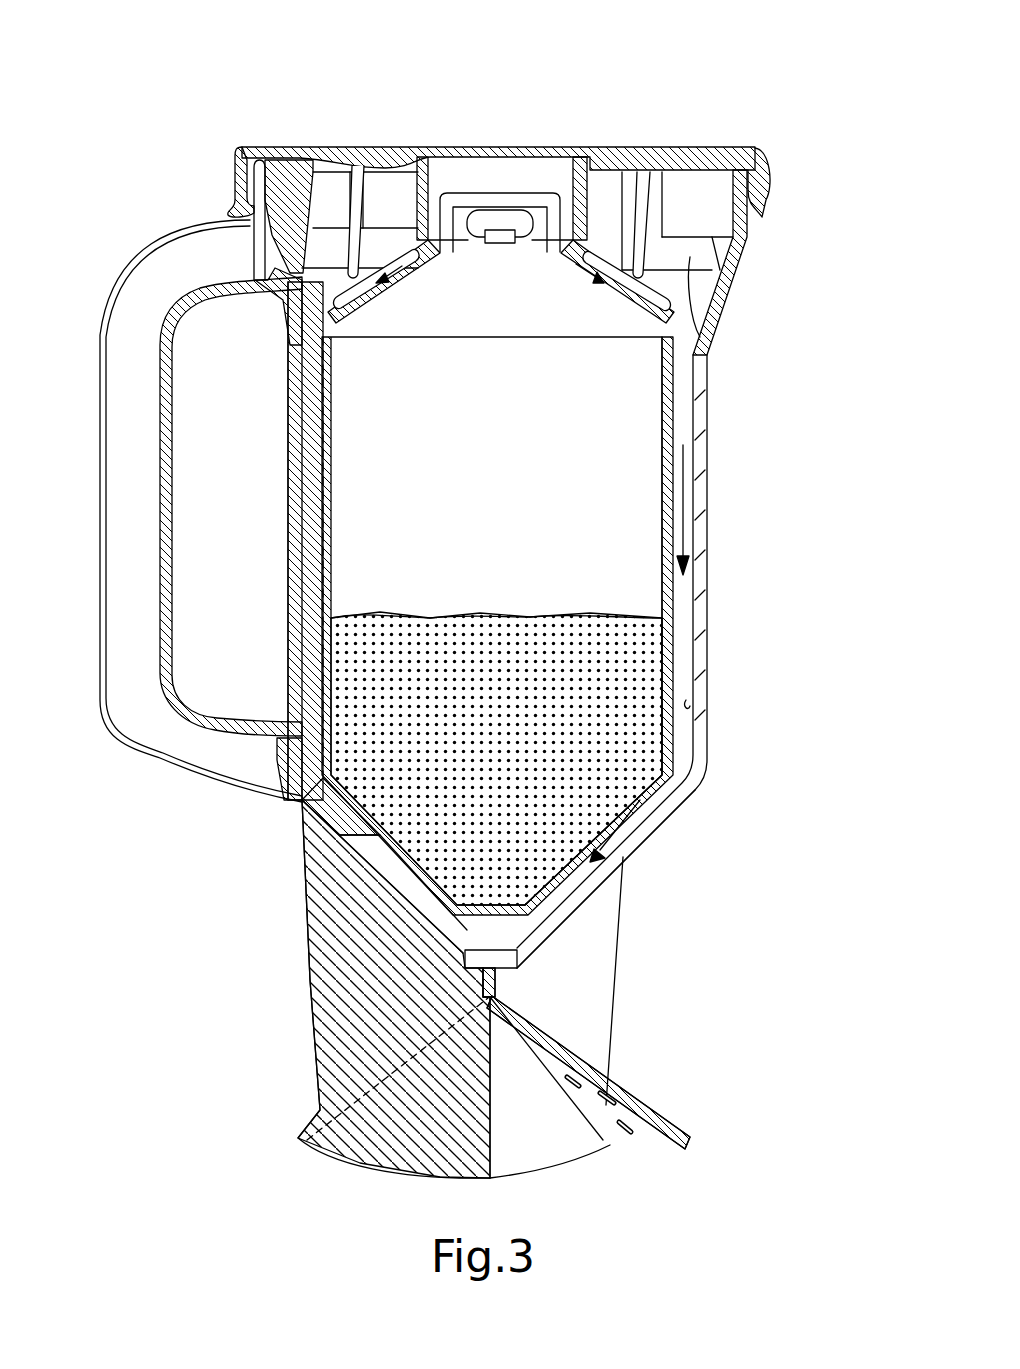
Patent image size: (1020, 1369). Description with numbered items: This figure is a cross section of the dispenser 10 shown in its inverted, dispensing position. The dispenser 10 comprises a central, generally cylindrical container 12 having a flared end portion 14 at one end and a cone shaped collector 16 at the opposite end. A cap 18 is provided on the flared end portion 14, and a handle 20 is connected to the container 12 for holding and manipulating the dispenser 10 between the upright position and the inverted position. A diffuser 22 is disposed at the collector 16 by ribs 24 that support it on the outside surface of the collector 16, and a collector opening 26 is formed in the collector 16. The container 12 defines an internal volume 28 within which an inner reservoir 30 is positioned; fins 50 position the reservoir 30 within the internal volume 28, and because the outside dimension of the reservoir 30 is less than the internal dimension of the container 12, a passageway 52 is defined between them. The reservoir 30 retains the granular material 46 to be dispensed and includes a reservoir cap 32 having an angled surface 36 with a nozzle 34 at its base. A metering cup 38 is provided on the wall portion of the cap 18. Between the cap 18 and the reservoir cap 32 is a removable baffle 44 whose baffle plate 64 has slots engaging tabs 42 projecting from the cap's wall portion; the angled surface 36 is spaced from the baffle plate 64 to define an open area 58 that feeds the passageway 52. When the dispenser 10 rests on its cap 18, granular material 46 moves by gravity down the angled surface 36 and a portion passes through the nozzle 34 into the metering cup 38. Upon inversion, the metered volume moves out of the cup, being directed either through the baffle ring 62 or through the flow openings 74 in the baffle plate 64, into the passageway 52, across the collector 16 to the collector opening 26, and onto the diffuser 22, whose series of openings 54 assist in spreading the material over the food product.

The dispenser 10 is at (166, 179).
The container 12 is at (707, 668).
The flared end portion 14 is at (545, 421).
The cone shaped collector 16 is at (640, 858).
The cap 18 is at (760, 150).
The handle 20 is at (169, 511).
The diffuser 22 is at (600, 1110).
The ribs 24 is at (587, 978).
The collector opening 26 is at (470, 960).
The internal volume 28 is at (690, 705).
The inner reservoir 30 is at (664, 636).
The reservoir cap 32 is at (695, 322).
The nozzle 34 is at (500, 255).
The angled surface 36 is at (556, 622).
The metering cup 38 is at (576, 148).
The tabs 42 is at (350, 190).
The baffle 44 is at (448, 175).
The granular material 46 is at (550, 630).
The fins 50 is at (303, 600).
The passageway 52 is at (700, 412).
The openings 54 is at (573, 1090).
The open area 58 is at (412, 285).
The baffle ring 62 is at (495, 189).
The baffle plate 64 is at (365, 200).
The flow openings 74 is at (478, 210).